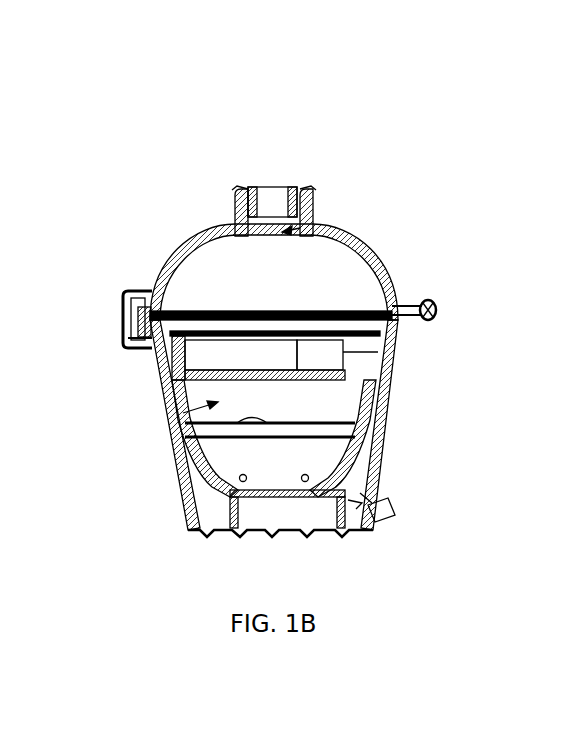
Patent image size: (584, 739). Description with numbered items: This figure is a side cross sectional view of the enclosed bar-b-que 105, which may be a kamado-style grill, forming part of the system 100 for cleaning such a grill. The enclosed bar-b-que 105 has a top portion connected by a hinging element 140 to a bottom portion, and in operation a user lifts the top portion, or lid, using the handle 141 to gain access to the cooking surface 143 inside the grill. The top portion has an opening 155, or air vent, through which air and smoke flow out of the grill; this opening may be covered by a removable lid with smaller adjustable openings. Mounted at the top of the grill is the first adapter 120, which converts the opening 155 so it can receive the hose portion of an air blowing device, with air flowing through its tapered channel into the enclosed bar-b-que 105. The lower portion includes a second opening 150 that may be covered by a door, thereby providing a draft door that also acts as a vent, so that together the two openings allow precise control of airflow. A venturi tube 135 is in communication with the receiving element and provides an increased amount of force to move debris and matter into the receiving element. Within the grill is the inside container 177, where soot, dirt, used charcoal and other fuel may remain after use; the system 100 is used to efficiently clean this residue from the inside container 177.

The system 100 is at (476, 157).
The enclosed bar-b-que 105 is at (406, 437).
The first adapter 120 is at (243, 198).
The venturi tube 135 is at (375, 490).
The hinging element 140 is at (121, 300).
The handle 141 is at (437, 309).
The cooking surface 143 is at (218, 328).
The second opening 150 is at (346, 498).
The opening 155 is at (313, 220).
The inside container 177 is at (180, 416).